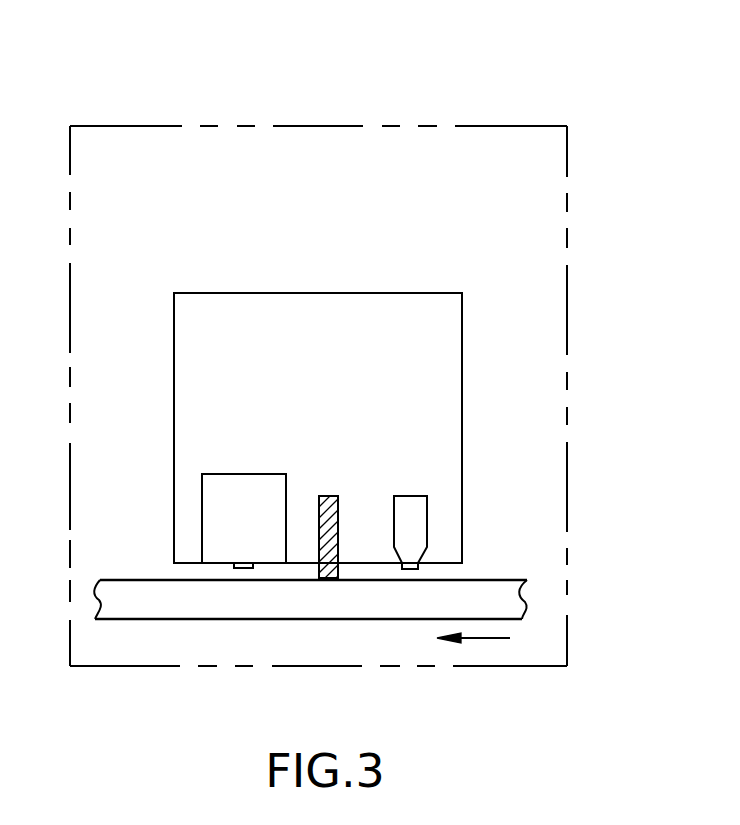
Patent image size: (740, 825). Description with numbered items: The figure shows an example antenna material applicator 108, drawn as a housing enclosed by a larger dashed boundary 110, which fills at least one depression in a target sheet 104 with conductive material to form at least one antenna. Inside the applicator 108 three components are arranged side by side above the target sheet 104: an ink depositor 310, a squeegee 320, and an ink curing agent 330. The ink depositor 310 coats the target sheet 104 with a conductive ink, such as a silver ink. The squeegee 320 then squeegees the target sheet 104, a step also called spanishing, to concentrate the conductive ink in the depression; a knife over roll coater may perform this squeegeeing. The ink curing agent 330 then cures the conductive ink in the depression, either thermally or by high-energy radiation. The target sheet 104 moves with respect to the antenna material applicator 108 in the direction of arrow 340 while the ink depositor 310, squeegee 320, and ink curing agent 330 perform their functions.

The processing station enclosure 110 is at (123, 126).
The antenna material applicator 108 is at (372, 293).
The ink curing agent 330 is at (245, 474).
The squeegee 320 is at (327, 496).
The ink depositor 310 is at (411, 496).
The target sheet 104 is at (505, 600).
The arrow 340 is at (485, 638).